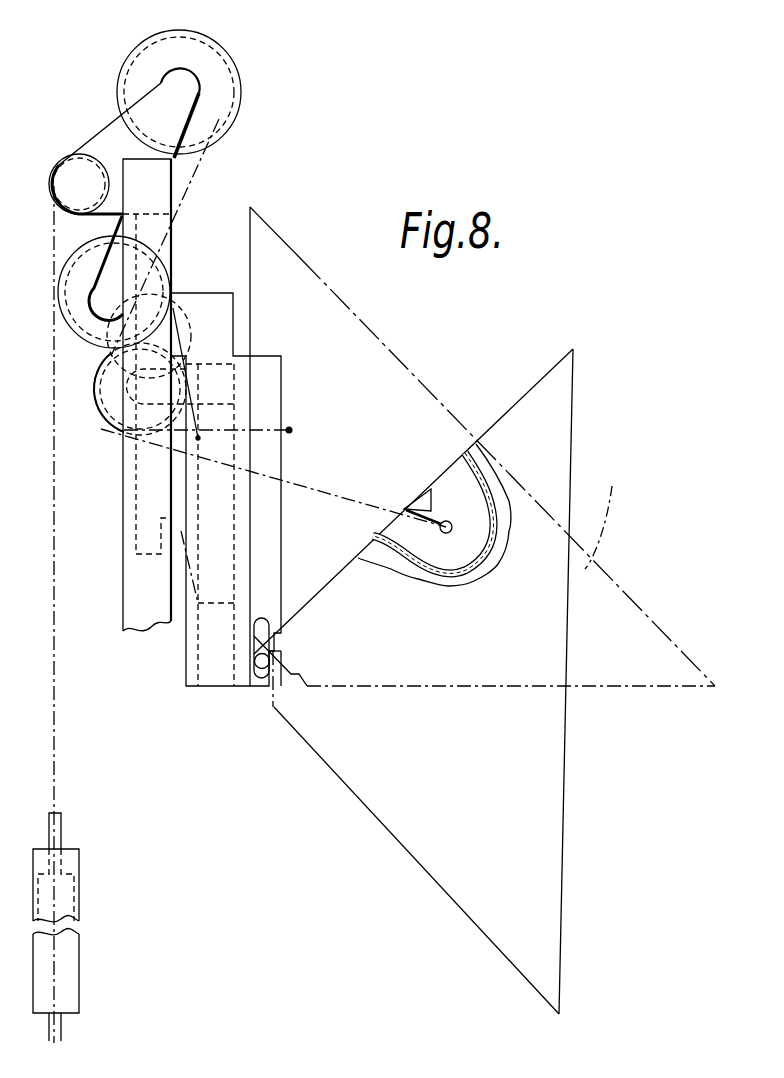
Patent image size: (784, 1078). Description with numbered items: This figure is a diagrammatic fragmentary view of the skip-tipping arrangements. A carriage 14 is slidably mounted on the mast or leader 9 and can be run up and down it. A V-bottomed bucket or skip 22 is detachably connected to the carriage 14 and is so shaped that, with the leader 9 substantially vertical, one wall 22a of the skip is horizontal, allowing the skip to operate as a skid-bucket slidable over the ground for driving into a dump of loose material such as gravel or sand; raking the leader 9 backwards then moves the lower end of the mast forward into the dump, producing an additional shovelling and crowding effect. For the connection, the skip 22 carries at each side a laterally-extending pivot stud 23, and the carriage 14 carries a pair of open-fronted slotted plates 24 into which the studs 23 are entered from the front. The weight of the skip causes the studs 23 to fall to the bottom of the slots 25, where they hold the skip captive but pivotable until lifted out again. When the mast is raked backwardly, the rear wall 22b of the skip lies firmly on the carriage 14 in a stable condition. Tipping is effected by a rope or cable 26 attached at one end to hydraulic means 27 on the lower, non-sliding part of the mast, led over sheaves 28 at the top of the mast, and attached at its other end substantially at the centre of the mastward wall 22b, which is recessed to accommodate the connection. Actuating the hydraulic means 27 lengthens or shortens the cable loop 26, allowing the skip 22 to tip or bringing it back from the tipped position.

The leader 9 is at (125, 620).
The carriage 14 is at (212, 292).
The skip 22 is at (572, 495).
The wall of skip 22a is at (520, 686).
The rear wall of skip 22b is at (249, 283).
The pivot stud 23 is at (260, 668).
The slotted plate 24 is at (240, 655).
The slot 25 is at (267, 683).
The cable 26 is at (358, 498).
The hydraulic means 27 is at (84, 876).
The sheaves 28 is at (116, 72).